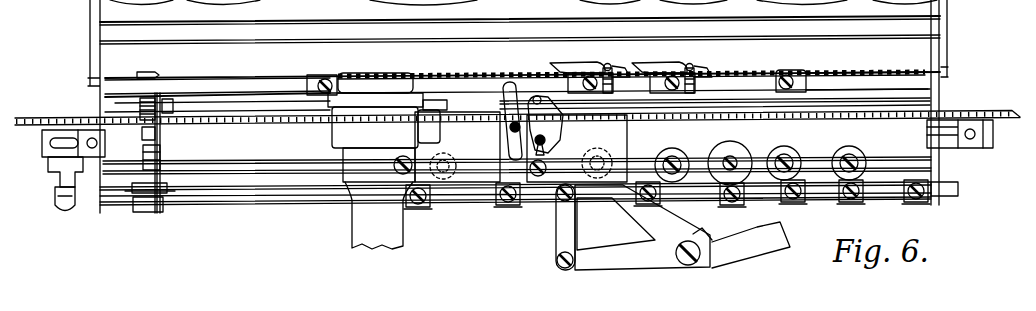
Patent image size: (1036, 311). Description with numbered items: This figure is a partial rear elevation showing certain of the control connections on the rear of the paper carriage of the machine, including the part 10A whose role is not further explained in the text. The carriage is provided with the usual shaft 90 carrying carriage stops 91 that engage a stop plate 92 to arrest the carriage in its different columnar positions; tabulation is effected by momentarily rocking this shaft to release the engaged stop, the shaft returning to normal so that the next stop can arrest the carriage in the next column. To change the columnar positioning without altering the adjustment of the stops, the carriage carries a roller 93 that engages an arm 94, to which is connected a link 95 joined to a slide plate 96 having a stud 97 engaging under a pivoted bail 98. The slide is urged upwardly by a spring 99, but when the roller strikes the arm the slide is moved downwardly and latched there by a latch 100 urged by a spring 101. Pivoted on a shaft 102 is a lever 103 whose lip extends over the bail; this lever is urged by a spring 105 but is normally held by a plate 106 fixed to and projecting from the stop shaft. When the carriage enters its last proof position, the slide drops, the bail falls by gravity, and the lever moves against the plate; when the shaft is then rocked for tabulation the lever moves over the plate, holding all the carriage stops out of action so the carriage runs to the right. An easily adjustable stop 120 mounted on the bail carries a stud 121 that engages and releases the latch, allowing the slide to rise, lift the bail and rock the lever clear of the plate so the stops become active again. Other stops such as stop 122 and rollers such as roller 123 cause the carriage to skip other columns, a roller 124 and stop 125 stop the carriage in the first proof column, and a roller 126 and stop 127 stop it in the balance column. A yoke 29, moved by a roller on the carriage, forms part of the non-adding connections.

The stop piece 10A is at (158, 72).
The yoke 29 is at (764, 246).
The shaft 90 is at (298, 188).
The carriage stops 91 is at (494, 206).
The stop plate 92 is at (664, 206).
The roller 93 is at (785, 150).
The arm 94 is at (598, 200).
The link 95 is at (558, 223).
The slide plate 96 is at (547, 141).
The stud 97 is at (565, 124).
The pivoted bail 98 is at (437, 80).
The spring 99 is at (547, 168).
The latch 100 is at (506, 83).
The spring 101 is at (466, 160).
The shaft 102 is at (239, 112).
The lever 103 is at (150, 158).
The spring 105 is at (140, 105).
The plate 106 is at (176, 202).
The adjustable stop 120 is at (677, 66).
The stud 121 is at (670, 70).
The stop 122 is at (584, 58).
The roller 123 is at (672, 150).
The roller 124 is at (857, 154).
The stop 125 is at (788, 71).
The roller 126 is at (471, 152).
The stop 127 is at (316, 76).